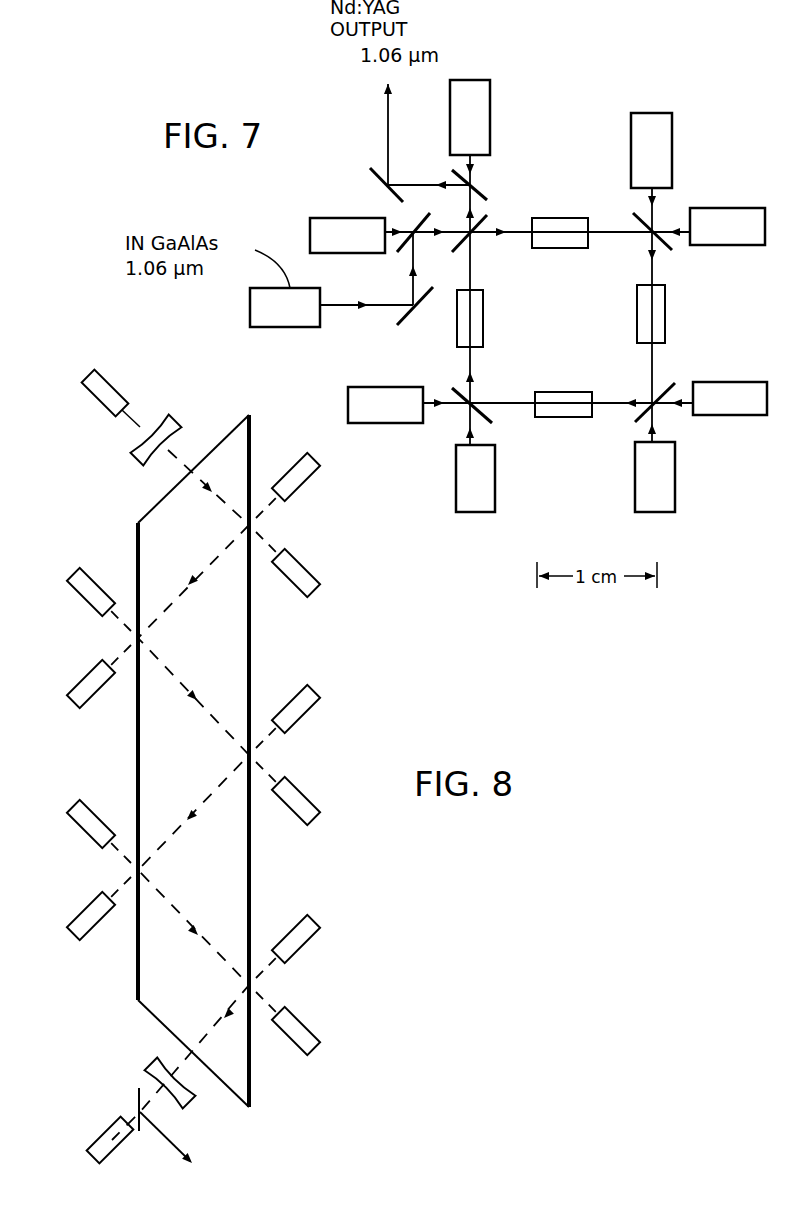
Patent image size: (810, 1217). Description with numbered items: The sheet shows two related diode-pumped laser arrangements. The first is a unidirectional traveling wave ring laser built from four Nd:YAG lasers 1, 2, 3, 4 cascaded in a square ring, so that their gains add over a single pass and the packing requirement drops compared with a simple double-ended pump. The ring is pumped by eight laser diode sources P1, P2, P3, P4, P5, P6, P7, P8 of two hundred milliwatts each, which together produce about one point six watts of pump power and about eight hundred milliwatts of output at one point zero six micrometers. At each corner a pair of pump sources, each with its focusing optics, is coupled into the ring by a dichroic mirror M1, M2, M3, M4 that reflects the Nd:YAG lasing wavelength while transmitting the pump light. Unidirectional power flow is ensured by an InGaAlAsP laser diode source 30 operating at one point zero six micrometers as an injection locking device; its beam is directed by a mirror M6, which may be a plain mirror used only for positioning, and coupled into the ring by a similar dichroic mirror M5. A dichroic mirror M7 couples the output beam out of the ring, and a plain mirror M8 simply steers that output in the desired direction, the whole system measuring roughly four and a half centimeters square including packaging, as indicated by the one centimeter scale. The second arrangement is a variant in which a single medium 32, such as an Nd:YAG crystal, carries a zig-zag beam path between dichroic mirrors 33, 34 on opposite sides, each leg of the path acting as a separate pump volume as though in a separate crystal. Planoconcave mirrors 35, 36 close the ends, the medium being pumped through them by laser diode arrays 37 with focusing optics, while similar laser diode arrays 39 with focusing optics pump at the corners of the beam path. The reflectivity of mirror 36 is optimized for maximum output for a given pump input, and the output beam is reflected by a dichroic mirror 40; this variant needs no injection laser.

In FIG. 7, the Nd:YAG laser 1 is at (667, 320).
In FIG. 7, the Nd:YAG laser 2 is at (570, 392).
In FIG. 7, the Nd:YAG laser 3 is at (483, 322).
In FIG. 7, the Nd:YAG laser 4 is at (568, 218).
In FIG. 7, the laser diode source 30 is at (300, 328).
In FIG. 7, the laser diode pump source P1 is at (463, 513).
In FIG. 7, the laser diode pump source P2 is at (641, 513).
In FIG. 7, the laser diode pump source P3 is at (718, 382).
In FIG. 7, the laser diode pump source P4 is at (714, 208).
In FIG. 7, the laser diode pump source P5 is at (643, 112).
In FIG. 7, the laser diode pump source P6 is at (491, 134).
In FIG. 7, the laser diode pump source P7 is at (330, 218).
In FIG. 7, the laser diode pump source P8 is at (366, 387).
In FIG. 7, the dichroic mirror M1 is at (663, 386).
In FIG. 7, the dichroic mirror M2 is at (462, 393).
In FIG. 7, the dichroic mirror M3 is at (453, 246).
In FIG. 7, the dichroic mirror M4 is at (665, 250).
In FIG. 7, the dichroic mirror M5 is at (403, 250).
In FIG. 7, the plain mirror M6 is at (423, 308).
In FIG. 7, the dichroic mirror M7 is at (478, 198).
In FIG. 7, the plain mirror M8 is at (368, 172).
In FIG. 8, the medium 32 is at (222, 896).
In FIG. 8, the dichroic mirror 33 is at (252, 650).
In FIG. 8, the dichroic mirror 34 is at (138, 766).
In FIG. 8, the planoconcave mirror 35 is at (136, 455).
In FIG. 8, the planoconcave mirror 36 is at (142, 1069).
In FIG. 8, the laser diode array 37 is at (115, 402).
In FIG. 8, the laser diode array 39 is at (312, 728).
In FIG. 8, the dichroic mirror 40 is at (137, 1098).